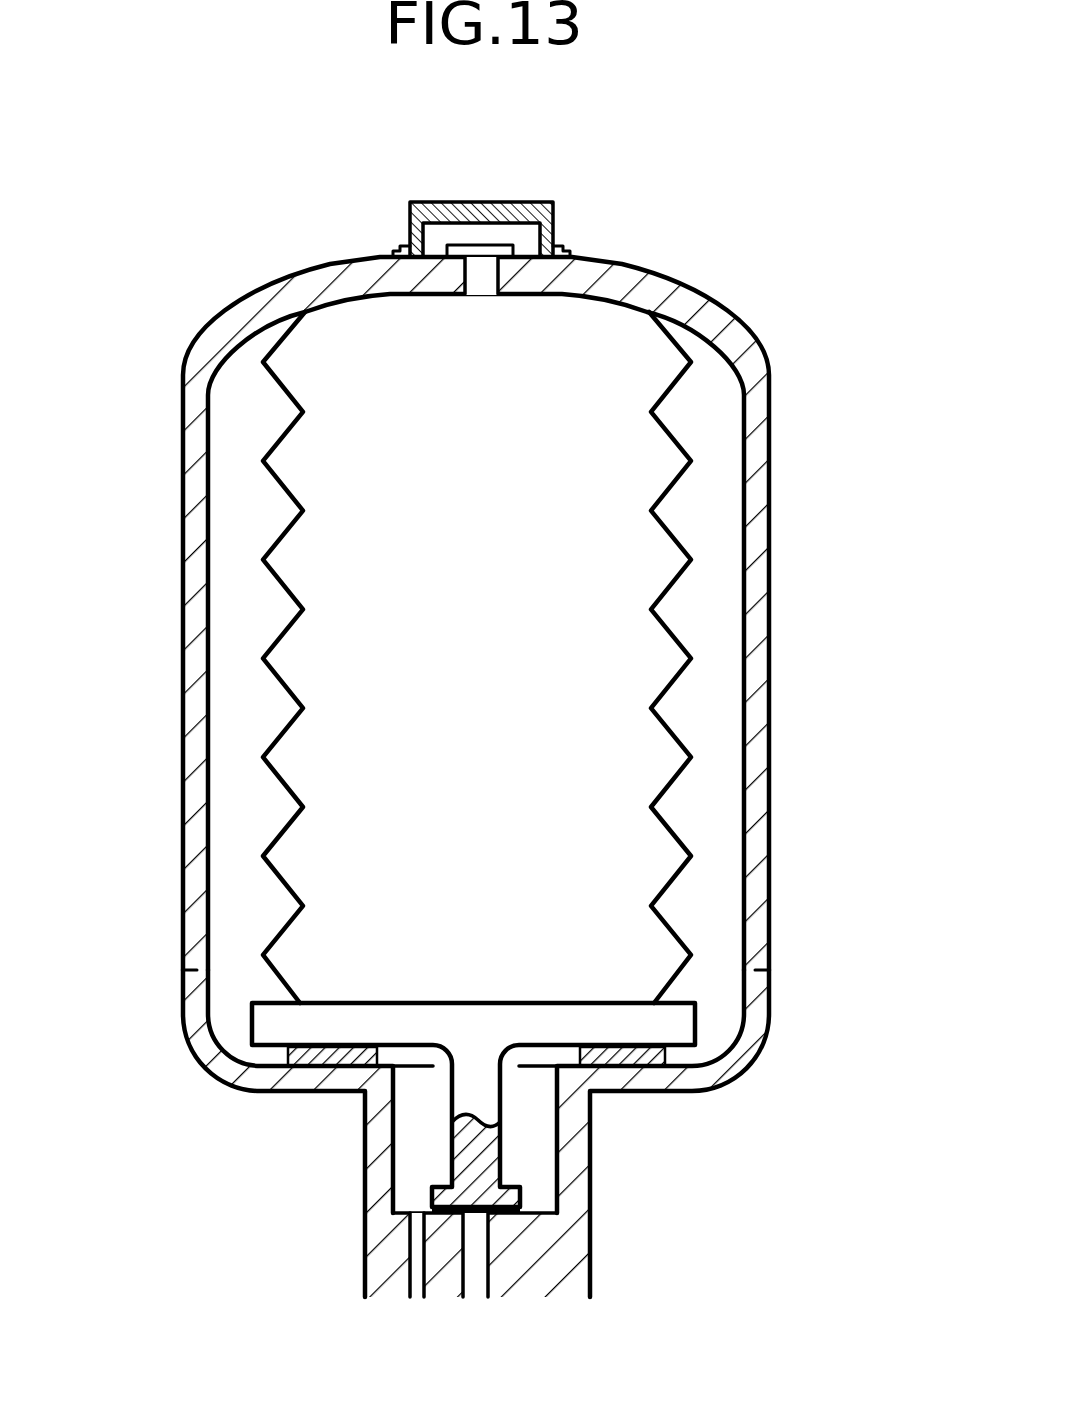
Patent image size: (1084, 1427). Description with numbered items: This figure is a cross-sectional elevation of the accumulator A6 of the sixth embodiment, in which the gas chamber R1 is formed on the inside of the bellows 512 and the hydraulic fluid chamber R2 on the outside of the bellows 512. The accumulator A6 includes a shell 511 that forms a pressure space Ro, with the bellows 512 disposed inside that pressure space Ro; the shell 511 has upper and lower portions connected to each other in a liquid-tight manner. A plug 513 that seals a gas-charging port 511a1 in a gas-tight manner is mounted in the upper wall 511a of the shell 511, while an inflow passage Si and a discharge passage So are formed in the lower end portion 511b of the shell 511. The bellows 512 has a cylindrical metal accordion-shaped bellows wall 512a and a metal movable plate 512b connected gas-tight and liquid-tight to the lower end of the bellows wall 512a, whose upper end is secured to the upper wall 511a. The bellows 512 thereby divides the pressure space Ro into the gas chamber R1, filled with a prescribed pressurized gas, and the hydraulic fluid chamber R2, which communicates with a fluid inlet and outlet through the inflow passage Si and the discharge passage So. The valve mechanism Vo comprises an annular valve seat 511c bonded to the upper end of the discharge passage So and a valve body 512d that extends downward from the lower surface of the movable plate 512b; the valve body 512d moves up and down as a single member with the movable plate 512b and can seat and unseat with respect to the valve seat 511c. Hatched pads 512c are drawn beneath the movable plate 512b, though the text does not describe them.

The shell 511 is at (196, 462).
The upper wall 511a is at (616, 283).
The lower end portion 511b is at (612, 1084).
The gas-charging port 511a1 is at (490, 264).
The annular valve seat 511c is at (508, 1214).
The plug 513 is at (487, 217).
The bellows 512 is at (680, 880).
The bellows wall 512a is at (282, 887).
The movable plate 512b is at (672, 1027).
The seal pads 512c is at (310, 1062).
The valve body 512d is at (440, 1190).
The valve mechanism Vo is at (532, 1197).
The inflow passage Si is at (415, 1246).
The discharge passage So is at (476, 1270).
The gas chamber R1 is at (320, 725).
The hydraulic fluid chamber R2 is at (725, 780).
The pressure space Ro is at (719, 590).
The accumulator A6 is at (765, 300).